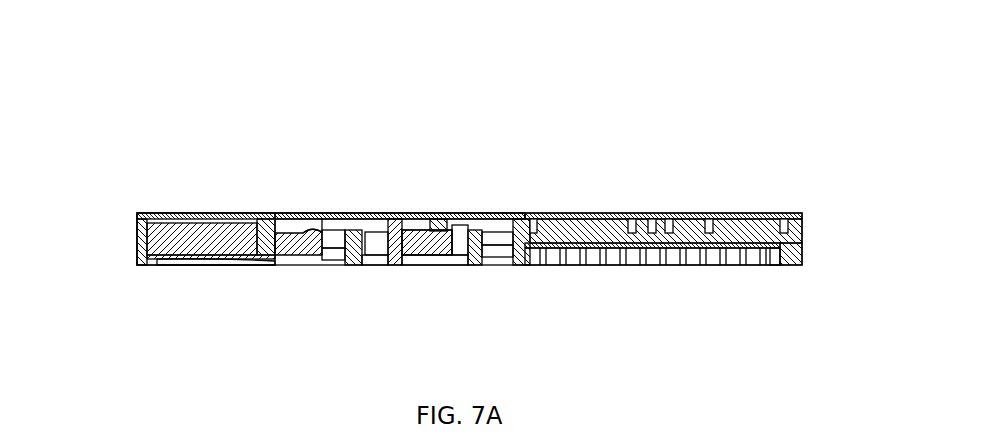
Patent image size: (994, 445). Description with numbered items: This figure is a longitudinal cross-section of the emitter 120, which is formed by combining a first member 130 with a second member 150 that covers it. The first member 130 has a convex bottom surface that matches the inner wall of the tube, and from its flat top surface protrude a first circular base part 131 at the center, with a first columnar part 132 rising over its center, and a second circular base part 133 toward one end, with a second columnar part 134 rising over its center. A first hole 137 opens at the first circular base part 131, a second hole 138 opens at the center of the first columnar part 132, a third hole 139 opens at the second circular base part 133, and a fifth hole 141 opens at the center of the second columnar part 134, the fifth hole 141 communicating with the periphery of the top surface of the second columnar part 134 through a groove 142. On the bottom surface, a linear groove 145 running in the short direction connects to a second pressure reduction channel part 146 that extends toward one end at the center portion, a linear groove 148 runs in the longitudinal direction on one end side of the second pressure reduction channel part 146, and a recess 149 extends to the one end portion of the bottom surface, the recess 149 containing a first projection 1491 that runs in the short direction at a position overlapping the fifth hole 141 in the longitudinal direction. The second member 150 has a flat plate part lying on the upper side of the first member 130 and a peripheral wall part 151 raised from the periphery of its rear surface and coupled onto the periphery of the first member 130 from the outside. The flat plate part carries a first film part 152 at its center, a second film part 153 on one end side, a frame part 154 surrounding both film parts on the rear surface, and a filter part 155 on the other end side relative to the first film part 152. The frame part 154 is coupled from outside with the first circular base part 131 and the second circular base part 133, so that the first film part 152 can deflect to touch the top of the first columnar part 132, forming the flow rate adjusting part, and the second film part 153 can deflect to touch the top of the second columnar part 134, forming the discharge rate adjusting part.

The emitter 120 is at (834, 78).
The first member 130 is at (193, 213).
The first circular base part 131 is at (420, 213).
The first columnar part 132 is at (480, 213).
The second circular base part 133 is at (284, 213).
The second columnar part 134 is at (350, 213).
The first hole 137 is at (507, 213).
The second hole 138 is at (458, 213).
The third hole 139 is at (376, 213).
The fifth hole 141 is at (328, 213).
The groove 142 is at (298, 213).
The linear groove 145 is at (773, 265).
The second pressure reduction channel part 146 is at (663, 265).
The linear groove 148 is at (445, 265).
The recess 149 is at (233, 262).
The first projection 1491 is at (320, 265).
The second member 150 is at (155, 213).
The peripheral wall part 151 is at (137, 248).
The first film part 152 is at (448, 213).
The second film part 153 is at (305, 213).
The frame part 154 is at (388, 265).
The filter part 155 is at (641, 213).